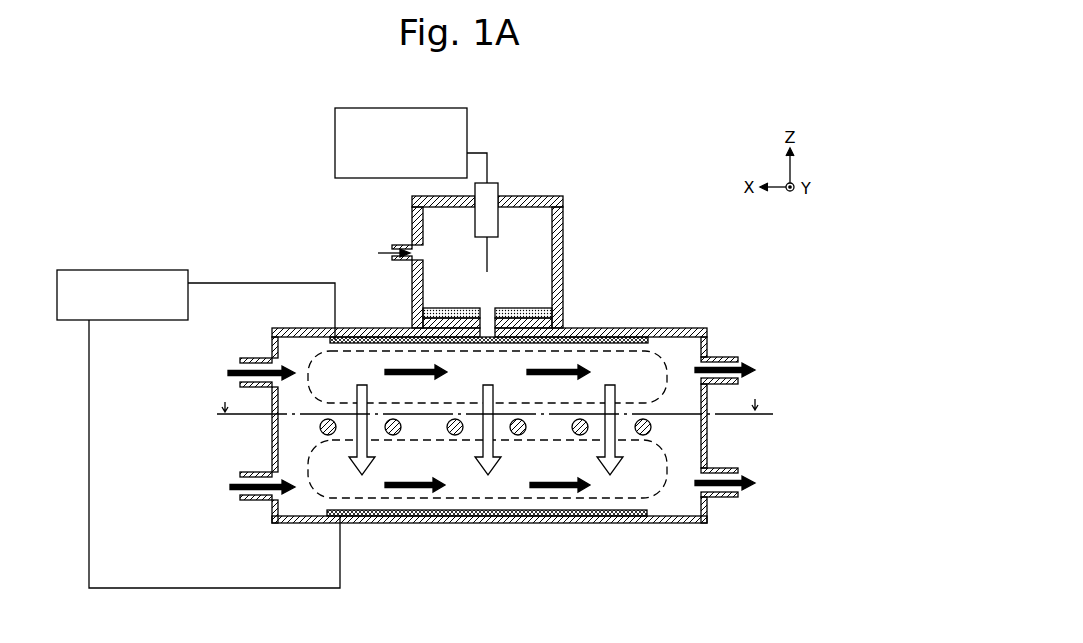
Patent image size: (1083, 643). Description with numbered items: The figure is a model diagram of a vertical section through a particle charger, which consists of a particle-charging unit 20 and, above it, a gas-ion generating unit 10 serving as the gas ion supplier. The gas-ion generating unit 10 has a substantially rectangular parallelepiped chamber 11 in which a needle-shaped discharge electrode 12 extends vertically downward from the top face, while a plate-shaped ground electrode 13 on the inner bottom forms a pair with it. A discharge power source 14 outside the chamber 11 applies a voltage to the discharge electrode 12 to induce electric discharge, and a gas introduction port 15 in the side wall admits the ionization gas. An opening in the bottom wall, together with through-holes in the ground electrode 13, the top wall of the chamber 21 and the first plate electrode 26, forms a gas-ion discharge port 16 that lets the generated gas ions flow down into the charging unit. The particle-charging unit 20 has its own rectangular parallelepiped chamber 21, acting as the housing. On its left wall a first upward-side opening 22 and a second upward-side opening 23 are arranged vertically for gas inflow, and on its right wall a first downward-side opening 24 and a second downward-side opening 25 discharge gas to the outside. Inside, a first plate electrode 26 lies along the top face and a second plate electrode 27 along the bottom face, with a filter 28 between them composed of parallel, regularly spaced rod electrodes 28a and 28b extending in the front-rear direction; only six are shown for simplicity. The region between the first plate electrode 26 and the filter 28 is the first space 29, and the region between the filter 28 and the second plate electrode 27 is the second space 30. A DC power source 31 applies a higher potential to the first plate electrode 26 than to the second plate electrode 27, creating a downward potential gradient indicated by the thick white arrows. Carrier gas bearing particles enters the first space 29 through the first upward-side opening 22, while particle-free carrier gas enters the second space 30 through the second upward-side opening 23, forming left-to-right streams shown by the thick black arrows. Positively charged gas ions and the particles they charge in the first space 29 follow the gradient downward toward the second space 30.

The gas-ion generating unit 10 is at (402, 241).
The chamber 11 is at (565, 214).
The discharge electrode 12 is at (490, 253).
The ground electrode 13 is at (528, 303).
The discharge power source 14 is at (335, 145).
The gas introduction port 15 is at (412, 247).
The gas-ion discharge port 16 is at (482, 310).
The particle-charging unit 20 is at (498, 437).
The chamber 21 is at (705, 330).
The first upward-side opening 22 is at (258, 358).
The second upward-side opening 23 is at (262, 500).
The first downward-side opening 24 is at (728, 357).
The second downward-side opening 25 is at (722, 497).
The first plate electrode 26 is at (316, 337).
The second plate electrode 27 is at (320, 518).
The filter 28 is at (503, 519).
The rod electrodes 28a is at (331, 436).
The rod electrodes 28b is at (395, 436).
The first space 29 is at (660, 350).
The second space 30 is at (665, 458).
The DC power source 31 is at (97, 270).